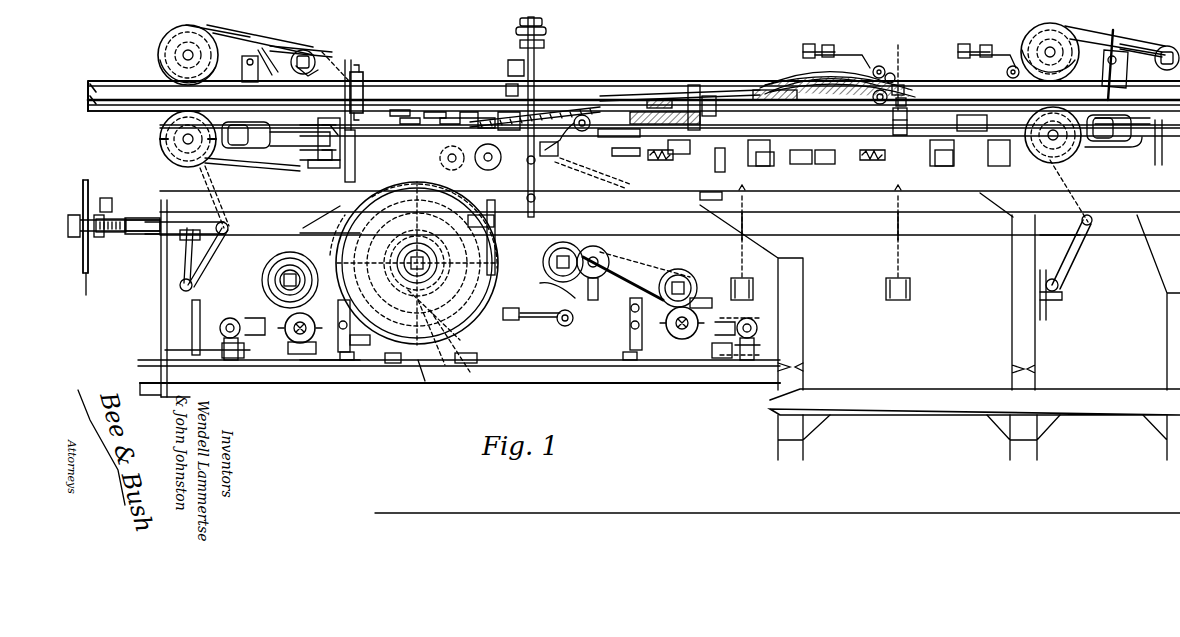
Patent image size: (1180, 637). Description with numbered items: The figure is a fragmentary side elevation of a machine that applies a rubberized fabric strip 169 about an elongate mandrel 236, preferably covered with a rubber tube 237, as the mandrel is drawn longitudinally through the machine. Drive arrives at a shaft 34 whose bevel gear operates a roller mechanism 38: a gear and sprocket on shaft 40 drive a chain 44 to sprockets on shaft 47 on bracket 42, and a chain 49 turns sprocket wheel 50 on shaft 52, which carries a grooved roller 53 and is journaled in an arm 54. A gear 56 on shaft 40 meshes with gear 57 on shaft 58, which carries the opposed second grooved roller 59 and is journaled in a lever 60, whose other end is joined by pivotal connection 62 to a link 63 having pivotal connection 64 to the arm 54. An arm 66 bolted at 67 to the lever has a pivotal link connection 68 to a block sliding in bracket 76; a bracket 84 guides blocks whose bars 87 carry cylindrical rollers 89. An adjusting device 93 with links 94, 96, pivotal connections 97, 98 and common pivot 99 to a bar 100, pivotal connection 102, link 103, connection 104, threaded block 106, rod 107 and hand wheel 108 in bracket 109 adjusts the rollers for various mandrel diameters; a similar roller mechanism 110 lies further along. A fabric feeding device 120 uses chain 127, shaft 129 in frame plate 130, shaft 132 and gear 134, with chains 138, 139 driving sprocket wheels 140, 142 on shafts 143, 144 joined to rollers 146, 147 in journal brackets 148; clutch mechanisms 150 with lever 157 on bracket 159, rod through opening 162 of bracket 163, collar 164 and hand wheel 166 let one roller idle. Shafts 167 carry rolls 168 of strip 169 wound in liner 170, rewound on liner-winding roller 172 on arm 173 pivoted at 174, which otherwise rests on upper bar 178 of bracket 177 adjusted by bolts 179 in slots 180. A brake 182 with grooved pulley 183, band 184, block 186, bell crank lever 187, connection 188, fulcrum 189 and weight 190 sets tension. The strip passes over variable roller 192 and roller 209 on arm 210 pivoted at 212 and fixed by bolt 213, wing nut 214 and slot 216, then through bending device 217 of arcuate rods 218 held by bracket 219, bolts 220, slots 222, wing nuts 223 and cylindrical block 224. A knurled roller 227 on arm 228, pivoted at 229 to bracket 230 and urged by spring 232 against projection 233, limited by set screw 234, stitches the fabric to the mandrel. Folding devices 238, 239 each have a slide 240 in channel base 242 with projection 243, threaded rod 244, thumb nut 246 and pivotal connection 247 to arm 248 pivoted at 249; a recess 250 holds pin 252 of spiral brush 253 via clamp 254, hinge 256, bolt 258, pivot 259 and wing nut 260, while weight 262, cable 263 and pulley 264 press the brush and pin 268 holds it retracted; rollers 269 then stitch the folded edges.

The shaft 34 is at (650, 78).
The roller mechanism 38 is at (165, 30).
The shaft 40 is at (258, 150).
The bracket 42 is at (346, 62).
The chain 44 is at (306, 50).
The shaft 47 is at (310, 64).
The chain 49 is at (262, 48).
The sprocket wheel 50 is at (200, 30).
The shaft 52 is at (184, 53).
The grooved roller 53 is at (158, 68).
The arm 54 is at (250, 37).
The gear 56 is at (242, 70).
The gear 57 is at (183, 140).
The shaft 58 is at (172, 151).
The second grooved roller 59 is at (166, 121).
The lever 60 is at (255, 150).
The pivotal connection 62 is at (298, 150).
The link 63 is at (330, 56).
The pivotal connection 64 is at (293, 48).
The arm 66 is at (305, 128).
The bolt connection 67 is at (230, 168).
The pivotal link connection 68 is at (310, 165).
The bracket 76 is at (356, 172).
The bracket 84 is at (325, 170).
The bar 87 is at (345, 153).
The roller 89 is at (362, 74).
The adjusting device 93 is at (80, 248).
The link 94 is at (306, 236).
The link 96 is at (200, 315).
The pivotal connection 97 is at (190, 182).
The pivotal connection 98 is at (180, 288).
The common pivotal connection 99 is at (205, 258).
The bar 100 is at (224, 235).
The pivotal connection 102 is at (183, 268).
The link 103 is at (193, 240).
The pivotal connection 104 is at (148, 235).
The internally threaded block 106 is at (130, 220).
The rod 107 is at (99, 240).
The hand wheel 108 is at (87, 296).
The bracket 109 is at (104, 200).
The roller mechanism 110 is at (1114, 30).
The fabric feeding device 120 is at (424, 384).
The chain 127 is at (430, 230).
The shaft 129 is at (494, 222).
The frame plate 130 is at (500, 385).
The shaft 132 is at (505, 112).
The gear 134 is at (486, 118).
The chain 138 is at (496, 233).
The chain 139 is at (625, 262).
The sprocket wheel 140 is at (338, 362).
The sprocket wheel 142 is at (683, 276).
The shaft 143 is at (300, 345).
The shaft 144 is at (682, 340).
The roller 146 is at (310, 355).
The roller 147 is at (700, 312).
The journal bracket 148 is at (668, 340).
The clutch mechanism 150 is at (718, 326).
The lever 157 is at (745, 362).
The bracket 159 is at (725, 360).
The opening 162 is at (762, 319).
The bracket 163 is at (200, 351).
The collar 164 is at (762, 355).
The hand wheel 166 is at (220, 330).
The shaft 167 is at (543, 260).
The roll 168 is at (393, 364).
The rubberized fabric strip 169 is at (663, 98).
The liner 170 is at (305, 228).
The liner-winding roller 172 is at (697, 285).
The arm 173 is at (660, 268).
The pivotal mounting 174 is at (596, 288).
The bracket 177 is at (628, 362).
The adjustable upper bar 178 is at (368, 335).
The bolt 179 is at (630, 326).
The slot 180 is at (630, 340).
The brake 182 is at (577, 264).
The grooved pulley 183 is at (540, 285).
The flexible brake band 184 is at (535, 310).
The block 186 is at (510, 320).
The bell crank lever 187 is at (472, 375).
The pivotal end connection 188 is at (465, 364).
The fulcrum 189 is at (446, 368).
The weight 190 is at (455, 338).
The variable roller 192 is at (495, 168).
The roller 209 is at (398, 110).
The arm 210 is at (445, 118).
The pivotal mounting 212 is at (468, 112).
The bolt 213 is at (432, 112).
The wing nut 214 is at (442, 167).
The slot 216 is at (408, 118).
The fabric bending device 217 is at (544, 44).
The arcuate parallel rods 218 is at (540, 20).
The bracket 219 is at (525, 32).
The bolt 220 is at (537, 162).
The slot 222 is at (537, 198).
The wing nut 223 is at (546, 31).
The cylindrical block 224 is at (560, 105).
The knurled roller 227 is at (610, 112).
The arm 228 is at (850, 55).
The pivotal connection 229 is at (526, 68).
The bracket 230 is at (988, 155).
The spring 232 is at (584, 132).
The projection 233 is at (618, 138).
The adjustable set screw 234 is at (512, 82).
The mandrel 236 is at (92, 84).
The rubber tube 237 is at (96, 113).
The folding device 238 is at (780, 72).
The folding device 239 is at (903, 45).
The slide 240 is at (945, 168).
The channel base 242 is at (700, 198).
The projection 243 is at (680, 155).
The threaded rod 244 is at (695, 85).
The thumb nut 246 is at (706, 96).
The pivotal connection 247 is at (803, 164).
The arm 248 is at (762, 166).
The pivot 249 is at (720, 160).
The recess 250 is at (745, 90).
The pin 252 is at (972, 123).
The spiral brush 253 is at (808, 44).
The releasable clamp 254 is at (905, 98).
The hinge connection 256 is at (908, 110).
The bolt 258 is at (890, 72).
The pivotal connection 259 is at (878, 90).
The wing nut 260 is at (905, 85).
The weight 262 is at (884, 290).
The cable 263 is at (897, 228).
The pulley 264 is at (901, 205).
The pin 268 is at (870, 160).
The roller 269 is at (878, 64).